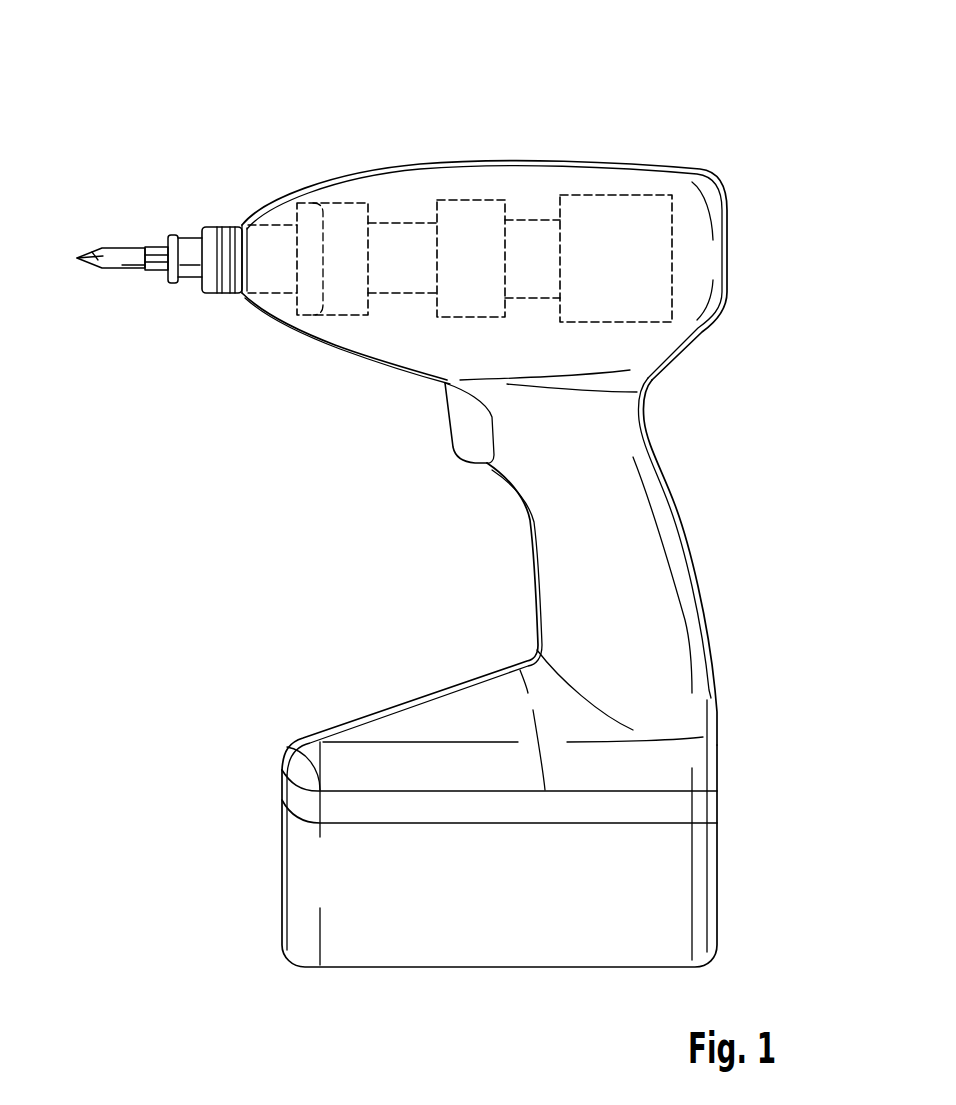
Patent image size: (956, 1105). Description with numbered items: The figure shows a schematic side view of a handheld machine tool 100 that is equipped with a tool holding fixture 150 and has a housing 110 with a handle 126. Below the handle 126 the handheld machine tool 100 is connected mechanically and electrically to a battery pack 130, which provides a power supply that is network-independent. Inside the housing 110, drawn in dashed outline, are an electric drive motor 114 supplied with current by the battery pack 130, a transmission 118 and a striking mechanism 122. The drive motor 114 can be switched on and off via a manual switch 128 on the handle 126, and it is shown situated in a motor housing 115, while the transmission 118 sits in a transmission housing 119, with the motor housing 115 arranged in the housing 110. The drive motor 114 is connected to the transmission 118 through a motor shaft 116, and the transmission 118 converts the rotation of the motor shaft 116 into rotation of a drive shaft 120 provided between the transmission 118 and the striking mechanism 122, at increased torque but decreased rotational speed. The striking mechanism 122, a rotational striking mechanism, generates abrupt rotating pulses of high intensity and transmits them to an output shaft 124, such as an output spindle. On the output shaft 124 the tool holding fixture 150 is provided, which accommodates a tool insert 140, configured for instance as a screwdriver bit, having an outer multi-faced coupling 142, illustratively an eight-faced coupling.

The handheld machine tool 100 is at (697, 121).
The housing 110 is at (697, 318).
The electric drive motor 114 is at (657, 242).
The motor housing 115 is at (673, 275).
The motor shaft 116 is at (535, 200).
The transmission 118 is at (473, 210).
The transmission housing 119 is at (490, 200).
The drive shaft 120 is at (415, 215).
The striking mechanism 122 is at (347, 210).
The output shaft 124 is at (265, 236).
The handle 126 is at (672, 550).
The manual switch 128 is at (465, 428).
The battery pack 130 is at (697, 895).
The tool insert 140 is at (107, 268).
The outer multi-faced coupling 142 is at (157, 272).
The tool holding fixture 150 is at (175, 229).